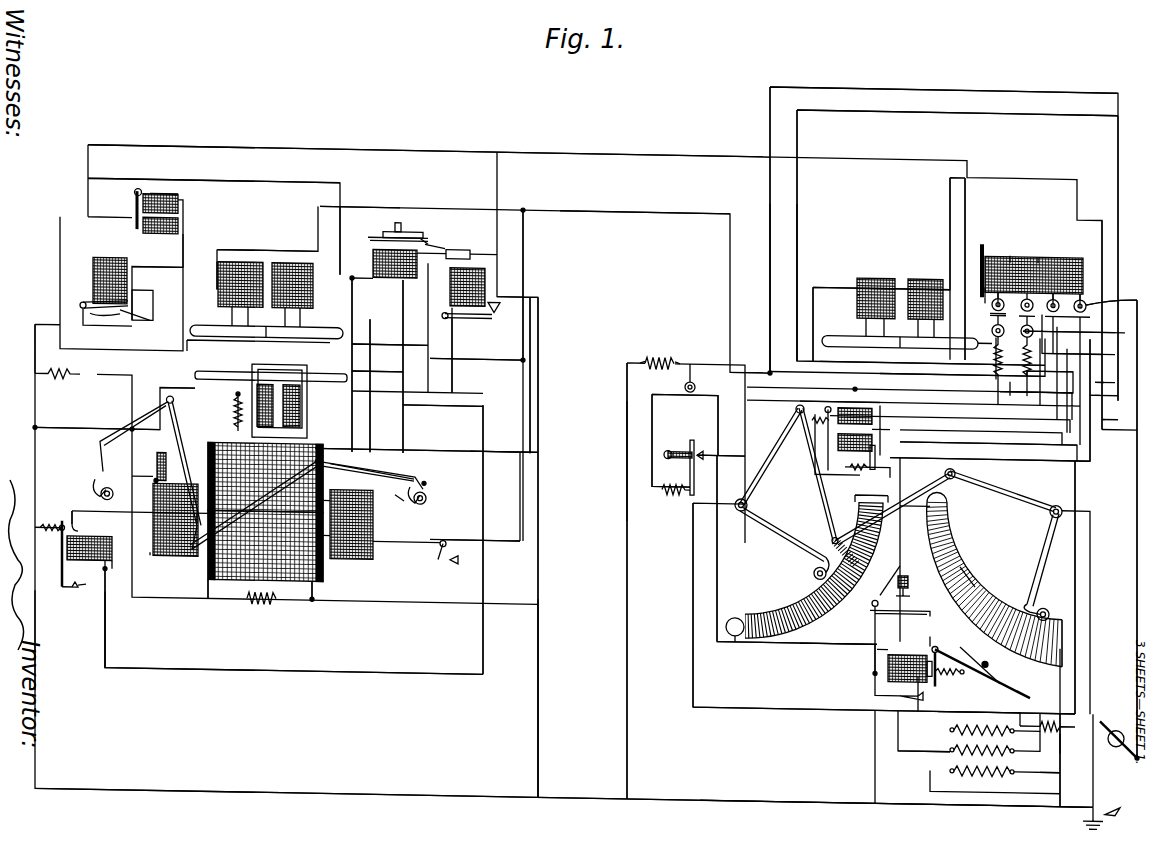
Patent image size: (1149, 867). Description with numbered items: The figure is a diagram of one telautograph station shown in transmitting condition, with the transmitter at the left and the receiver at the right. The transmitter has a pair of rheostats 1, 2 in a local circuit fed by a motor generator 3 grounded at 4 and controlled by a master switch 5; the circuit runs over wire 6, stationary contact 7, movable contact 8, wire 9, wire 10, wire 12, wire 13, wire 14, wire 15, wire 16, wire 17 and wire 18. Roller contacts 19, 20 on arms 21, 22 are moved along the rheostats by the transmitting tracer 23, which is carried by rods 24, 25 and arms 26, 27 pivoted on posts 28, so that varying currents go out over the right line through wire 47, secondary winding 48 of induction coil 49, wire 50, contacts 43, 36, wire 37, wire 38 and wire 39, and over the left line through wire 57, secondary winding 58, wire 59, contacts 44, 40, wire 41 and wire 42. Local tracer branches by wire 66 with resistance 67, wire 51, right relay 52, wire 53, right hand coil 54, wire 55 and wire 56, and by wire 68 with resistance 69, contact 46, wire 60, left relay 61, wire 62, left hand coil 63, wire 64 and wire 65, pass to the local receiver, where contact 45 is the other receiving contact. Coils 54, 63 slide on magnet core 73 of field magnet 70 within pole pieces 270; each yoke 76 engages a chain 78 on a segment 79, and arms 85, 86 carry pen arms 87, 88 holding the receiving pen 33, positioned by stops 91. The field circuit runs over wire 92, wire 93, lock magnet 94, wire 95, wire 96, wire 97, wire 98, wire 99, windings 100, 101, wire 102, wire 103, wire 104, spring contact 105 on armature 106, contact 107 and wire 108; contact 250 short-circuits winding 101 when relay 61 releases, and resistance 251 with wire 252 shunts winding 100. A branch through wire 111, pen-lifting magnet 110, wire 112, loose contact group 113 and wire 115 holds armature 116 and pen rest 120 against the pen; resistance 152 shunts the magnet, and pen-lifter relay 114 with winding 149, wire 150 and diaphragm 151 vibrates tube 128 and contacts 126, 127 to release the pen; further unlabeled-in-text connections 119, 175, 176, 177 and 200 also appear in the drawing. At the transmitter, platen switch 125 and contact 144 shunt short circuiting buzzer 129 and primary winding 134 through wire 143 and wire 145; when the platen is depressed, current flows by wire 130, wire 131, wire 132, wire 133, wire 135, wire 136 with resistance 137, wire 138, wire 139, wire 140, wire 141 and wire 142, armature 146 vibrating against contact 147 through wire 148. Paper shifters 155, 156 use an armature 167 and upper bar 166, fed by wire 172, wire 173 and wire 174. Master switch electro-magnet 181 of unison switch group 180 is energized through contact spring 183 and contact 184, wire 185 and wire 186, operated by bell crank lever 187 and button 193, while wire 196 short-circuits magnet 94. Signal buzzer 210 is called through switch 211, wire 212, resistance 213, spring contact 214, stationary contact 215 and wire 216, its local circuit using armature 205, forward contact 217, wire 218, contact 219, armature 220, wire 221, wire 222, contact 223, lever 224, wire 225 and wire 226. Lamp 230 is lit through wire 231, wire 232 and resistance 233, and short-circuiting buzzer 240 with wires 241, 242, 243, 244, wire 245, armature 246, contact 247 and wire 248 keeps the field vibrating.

The right rheostat 1 is at (968, 580).
The left rheostat 2 is at (802, 598).
The motor generator 3 is at (1116, 739).
The ground 4 is at (1101, 818).
The master switch 5 is at (1034, 264).
The wire 6 is at (1137, 514).
The stationary contact 7 is at (1137, 292).
The movable contact 8 is at (1068, 310).
The wire 9 is at (1068, 380).
The wire 10 is at (904, 485).
The wire 12 is at (900, 556).
The wire 13 is at (838, 637).
The wire 14 is at (750, 640).
The wire 15 is at (1060, 672).
The wire 16 is at (208, 802).
The wire 17 is at (803, 488).
The wire 18 is at (627, 602).
The roller contact 19 is at (1044, 603).
The roller contact 20 is at (818, 570).
The arm 21 is at (1038, 546).
The arm 22 is at (818, 540).
The transmitting tracer 23 is at (832, 537).
The rod 24 is at (955, 480).
The rod 25 is at (815, 458).
The arm 26 is at (1040, 488).
The arm 27 is at (756, 468).
The post 28 is at (746, 494).
The receiving pen 33 is at (195, 560).
The movable contact 36 is at (1045, 272).
The wire 37 is at (1082, 351).
The wire 38 is at (962, 358).
The right main line wire 39 is at (988, 90).
The movable contact 40 is at (1000, 270).
The wire 41 is at (992, 308).
The wire 42 is at (1004, 110).
The stationary contact 43 is at (1038, 250).
The stationary contact 44 is at (1010, 248).
The stationary contact 45 is at (1079, 331).
The stationary contact 46 is at (990, 325).
The wire 47 is at (1073, 500).
The secondary winding 48 is at (952, 762).
The induction coil 49 is at (1045, 760).
The wire 50 is at (985, 282).
The wire 51 is at (1118, 268).
The right relay 52 is at (486, 288).
The wire 53 is at (390, 326).
The right hand coil 54 is at (392, 478).
The wire 55 is at (496, 456).
The wire 56 is at (538, 638).
The wire 57 is at (693, 514).
The secondary winding 58 is at (950, 730).
The wire 59 is at (986, 702).
The wire 60 is at (260, 154).
The left relay 61 is at (93, 290).
The wire 62 is at (163, 272).
The left hand coil 63 is at (157, 466).
The wire 64 is at (96, 434).
The wire 65 is at (36, 612).
The wire 66 is at (1050, 376).
The resistance 67 is at (1027, 388).
The wire 68 is at (1010, 388).
The resistance 69 is at (996, 372).
The field magnet 70 is at (210, 588).
The magnet core 73 is at (180, 509).
The yoke 76 is at (156, 494).
The chain 78 is at (92, 496).
The segment 79 is at (107, 510).
The arm 85 is at (372, 472).
The arm 86 is at (118, 465).
The pen arm 87 is at (240, 455).
The pen arm 88 is at (192, 480).
The stop 91 is at (966, 452).
The wire 92 is at (1020, 455).
The wire 93 is at (855, 474).
The lock magnet 94 is at (864, 427).
The wire 95 is at (855, 384).
The wire 96 is at (664, 218).
The wire 97 is at (524, 278).
The wire 98 is at (520, 496).
The wire 99 is at (312, 593).
The winding 100 is at (265, 545).
The winding 101 is at (265, 477).
The wire 102 is at (326, 448).
The wire 103 is at (352, 378).
The wire 104 is at (352, 348).
The spring contact 105 is at (150, 318).
The armature 106 is at (97, 307).
The contact 107 is at (143, 306).
The wire 108 is at (36, 360).
The pen-lifting magnet 110 is at (320, 384).
The wire 111 is at (222, 411).
The wire 112 is at (428, 338).
The loose contact group 113 is at (402, 224).
The pen-lifter relay 114 is at (443, 261).
The wire 115 is at (352, 316).
The armature 116 is at (238, 404).
The conductor 119 is at (185, 380).
The pen rest 120 is at (246, 380).
The platen switch 125 is at (908, 612).
The contact 126 is at (428, 243).
The contact 127 is at (372, 236).
The tube 128 is at (412, 236).
The short circuiting buzzer 129 is at (900, 648).
The wire 130 is at (858, 648).
The wire 131 is at (870, 670).
The wire 132 is at (898, 735).
The wire 133 is at (898, 745).
The primary winding 134 is at (1014, 742).
The wire 135 is at (1008, 746).
The wire 136 is at (1033, 700).
The resistance 137 is at (1060, 725).
The wire 138 is at (1094, 722).
The wire 139 is at (880, 644).
The wire 140 is at (930, 638).
The wire 141 is at (940, 640).
The wire 142 is at (1004, 672).
The wire 143 is at (870, 617).
The contact 144 is at (922, 590).
The wire 145 is at (980, 596).
The armature 146 is at (950, 676).
The contact 147 is at (908, 690).
The wire 148 is at (900, 686).
The winding 149 is at (382, 270).
The wire 150 is at (278, 192).
The metal diaphragm 151 is at (447, 237).
The resistance 152 is at (168, 405).
The paper shifter 155 is at (900, 289).
The paper shifter 156 is at (265, 277).
The upper bar 166 is at (857, 298).
The armature 167 is at (250, 331).
The wire 172 is at (217, 298).
The wire 173 is at (950, 212).
The wire 174 is at (1102, 215).
The conductor 175 is at (320, 218).
The conductor 176 is at (260, 256).
The conductor 177 is at (360, 280).
The unison switch group 180 is at (814, 435).
The electro-magnet 181 is at (998, 262).
The contact spring 183 is at (876, 472).
The contact 184 is at (988, 433).
The wire 185 is at (978, 242).
The wire 186 is at (1080, 249).
The bell crank lever 187 is at (825, 466).
The button 193 is at (1070, 302).
The wire 196 is at (888, 390).
The link 200 is at (790, 424).
The armature 205 is at (470, 353).
The signal buzzer 210 is at (176, 231).
The switch 211 is at (674, 441).
The wire 212 is at (700, 396).
The resistance 213 is at (665, 492).
The spring contact 214 is at (690, 468).
The stationary contact 215 is at (702, 447).
The wire 216 is at (745, 370).
The forward contact 217 is at (500, 316).
The wire 218 is at (506, 361).
The contact 219 is at (133, 226).
The armature 220 is at (134, 201).
The wire 221 is at (160, 222).
The wire 222 is at (174, 260).
The contact 223 is at (456, 566).
The lever 224 is at (437, 560).
The wire 225 is at (531, 421).
The wire 226 is at (540, 396).
The lamp 230 is at (684, 384).
The wire 231 is at (720, 580).
The wire 232 is at (627, 458).
The resistance 233 is at (660, 353).
The short-circuiting buzzer 240 is at (87, 554).
The wire 241 is at (84, 516).
The wire 242 is at (72, 520).
The wire 243 is at (107, 582).
The wire 244 is at (105, 652).
The wire 245 is at (36, 526).
The armature 246 is at (64, 585).
The contact 247 is at (84, 583).
The wire 248 is at (102, 594).
The contact 250 is at (122, 330).
The resistance 251 is at (259, 607).
The wire 252 is at (312, 610).
The magnet pole pieces 270 is at (366, 558).